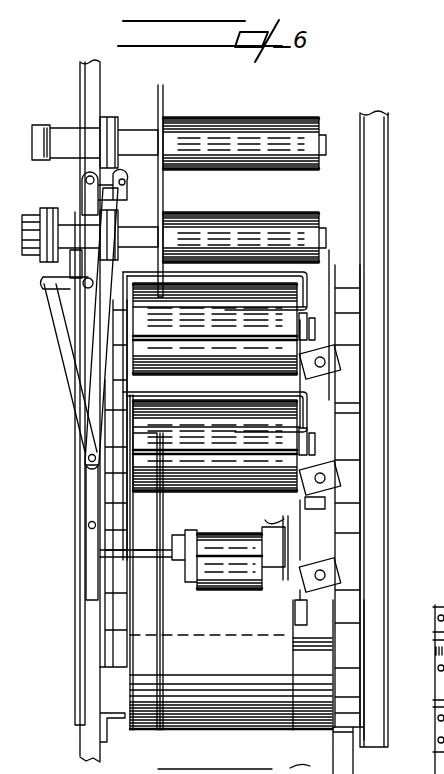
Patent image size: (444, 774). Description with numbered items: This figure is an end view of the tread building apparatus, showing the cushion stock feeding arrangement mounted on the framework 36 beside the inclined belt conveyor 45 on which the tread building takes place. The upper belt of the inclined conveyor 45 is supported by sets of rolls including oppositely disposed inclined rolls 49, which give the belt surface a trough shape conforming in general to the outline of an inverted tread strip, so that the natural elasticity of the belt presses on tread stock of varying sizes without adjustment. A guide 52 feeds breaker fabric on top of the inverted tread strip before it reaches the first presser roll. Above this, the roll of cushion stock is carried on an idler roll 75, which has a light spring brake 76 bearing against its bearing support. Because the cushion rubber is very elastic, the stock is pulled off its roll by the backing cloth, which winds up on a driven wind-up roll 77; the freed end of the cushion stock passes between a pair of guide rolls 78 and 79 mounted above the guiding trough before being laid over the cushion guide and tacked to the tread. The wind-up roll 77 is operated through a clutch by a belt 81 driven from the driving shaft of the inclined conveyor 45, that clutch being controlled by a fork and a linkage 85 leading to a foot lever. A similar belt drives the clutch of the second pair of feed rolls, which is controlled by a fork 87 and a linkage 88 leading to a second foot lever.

The framework 36 is at (376, 622).
The inclined belt conveyor 45 is at (438, 476).
The inclined rolls 49 is at (324, 384).
The guide 52 is at (225, 548).
The idler roll 75 is at (276, 86).
The light spring brake 76 is at (53, 127).
The driven or wind-up roll 77 is at (236, 195).
The guide roll 78 is at (262, 336).
The guide roll 79 is at (284, 292).
The belt 81 is at (55, 208).
The linkage 85 is at (118, 202).
The fork 87 is at (440, 652).
The linkage 88 is at (58, 337).